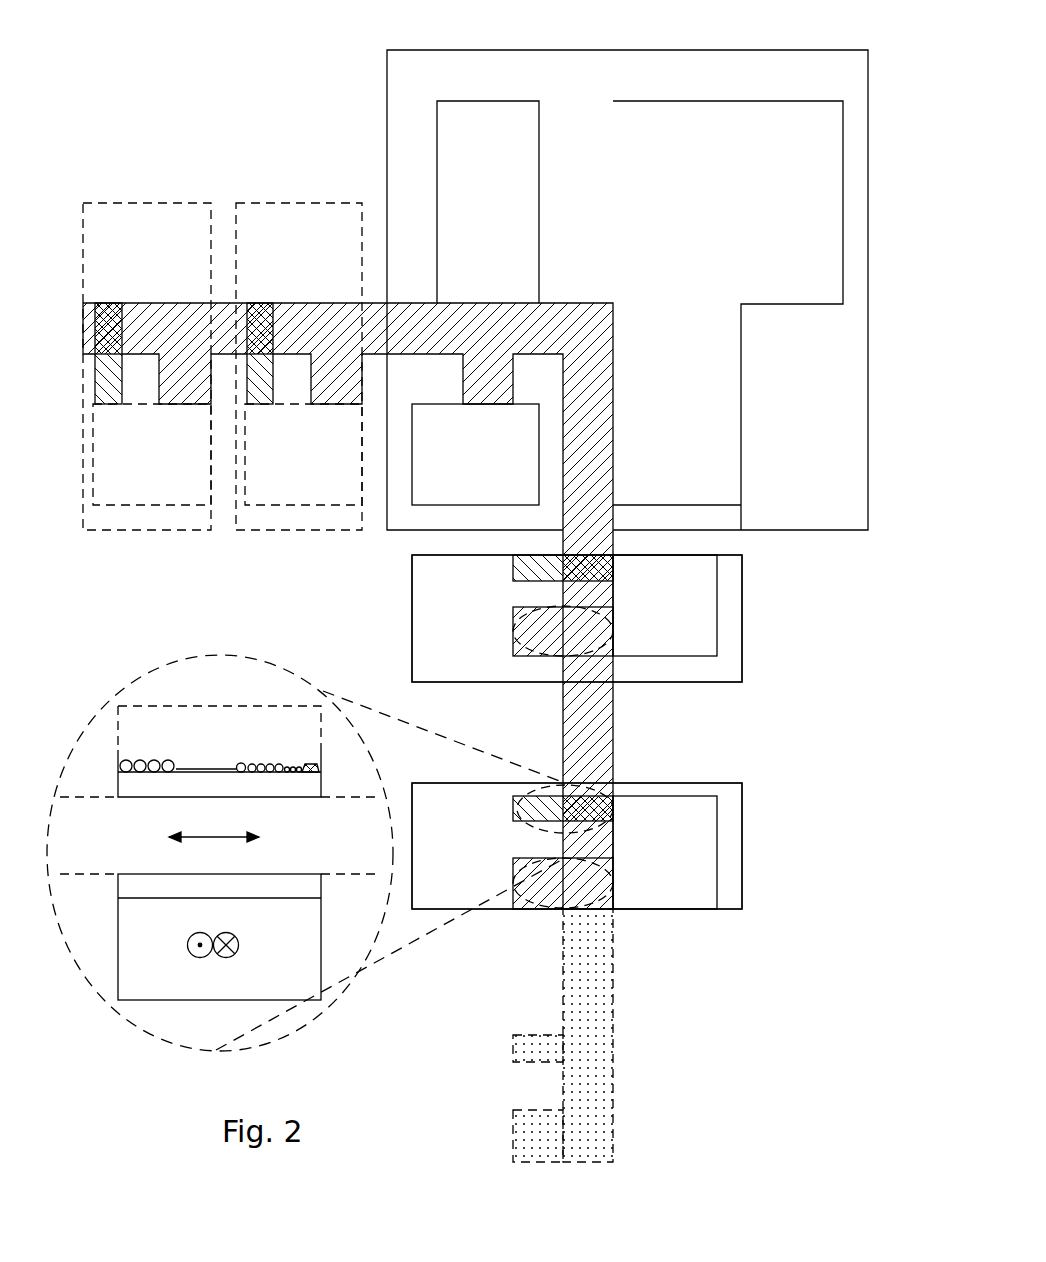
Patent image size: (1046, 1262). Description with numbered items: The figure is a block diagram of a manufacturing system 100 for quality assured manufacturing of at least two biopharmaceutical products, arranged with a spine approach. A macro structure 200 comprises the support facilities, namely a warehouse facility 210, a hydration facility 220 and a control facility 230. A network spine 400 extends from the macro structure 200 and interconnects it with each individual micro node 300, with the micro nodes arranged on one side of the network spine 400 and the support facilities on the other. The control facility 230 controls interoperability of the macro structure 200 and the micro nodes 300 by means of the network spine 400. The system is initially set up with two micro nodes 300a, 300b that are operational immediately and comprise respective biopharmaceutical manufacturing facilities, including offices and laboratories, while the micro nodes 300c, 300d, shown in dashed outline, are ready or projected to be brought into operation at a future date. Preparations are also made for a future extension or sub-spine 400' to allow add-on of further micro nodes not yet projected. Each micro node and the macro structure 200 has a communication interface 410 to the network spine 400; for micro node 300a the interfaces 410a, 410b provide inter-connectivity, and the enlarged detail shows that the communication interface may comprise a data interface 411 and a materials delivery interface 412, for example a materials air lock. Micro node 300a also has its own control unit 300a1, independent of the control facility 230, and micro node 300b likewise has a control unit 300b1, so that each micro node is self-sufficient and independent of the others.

The manufacturing system 100 is at (286, 80).
The macro structure 200 is at (627, 290).
The warehouse facility 210 is at (728, 315).
The hydration facility 220 is at (488, 202).
The control facility 230 is at (475, 454).
The micro node 300 is at (742, 600).
The micro node 300a is at (577, 846).
The control unit 300a1 is at (665, 852).
The micro node 300b is at (577, 618).
The control unit 300b1 is at (665, 605).
The micro node 300c is at (147, 366).
The micro node 300d is at (299, 366).
The network spine 400 is at (348, 523).
The sub-spine 400' is at (636, 1035).
The communication interface 410 is at (515, 640).
The communication interface 410a is at (520, 905).
The communication interface 410b is at (553, 790).
The data interface 411 is at (310, 959).
The materials delivery interface 412 is at (200, 724).